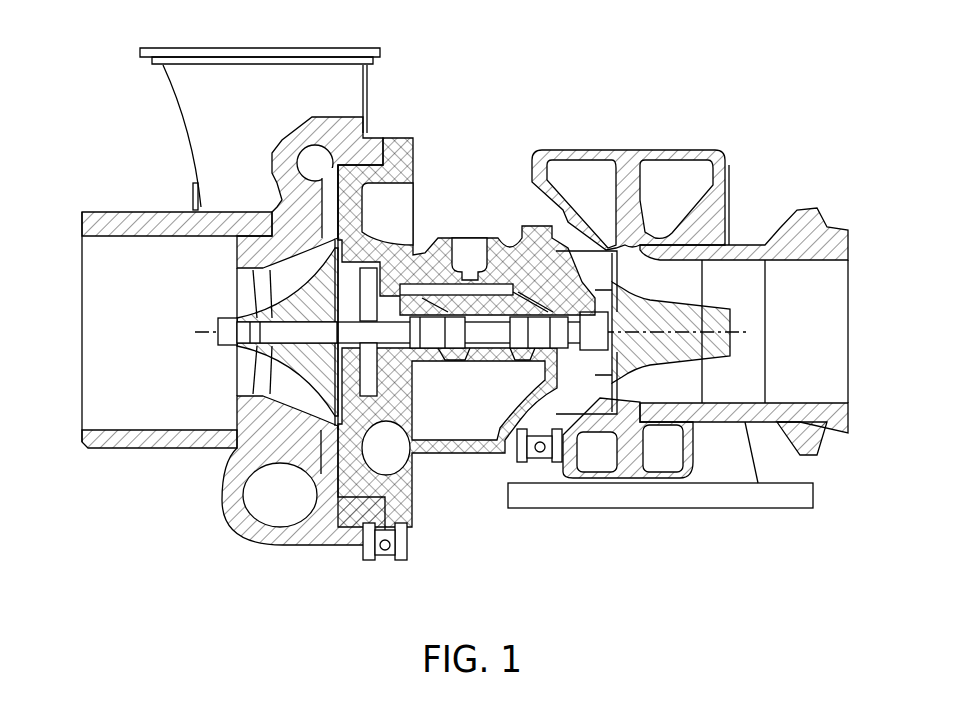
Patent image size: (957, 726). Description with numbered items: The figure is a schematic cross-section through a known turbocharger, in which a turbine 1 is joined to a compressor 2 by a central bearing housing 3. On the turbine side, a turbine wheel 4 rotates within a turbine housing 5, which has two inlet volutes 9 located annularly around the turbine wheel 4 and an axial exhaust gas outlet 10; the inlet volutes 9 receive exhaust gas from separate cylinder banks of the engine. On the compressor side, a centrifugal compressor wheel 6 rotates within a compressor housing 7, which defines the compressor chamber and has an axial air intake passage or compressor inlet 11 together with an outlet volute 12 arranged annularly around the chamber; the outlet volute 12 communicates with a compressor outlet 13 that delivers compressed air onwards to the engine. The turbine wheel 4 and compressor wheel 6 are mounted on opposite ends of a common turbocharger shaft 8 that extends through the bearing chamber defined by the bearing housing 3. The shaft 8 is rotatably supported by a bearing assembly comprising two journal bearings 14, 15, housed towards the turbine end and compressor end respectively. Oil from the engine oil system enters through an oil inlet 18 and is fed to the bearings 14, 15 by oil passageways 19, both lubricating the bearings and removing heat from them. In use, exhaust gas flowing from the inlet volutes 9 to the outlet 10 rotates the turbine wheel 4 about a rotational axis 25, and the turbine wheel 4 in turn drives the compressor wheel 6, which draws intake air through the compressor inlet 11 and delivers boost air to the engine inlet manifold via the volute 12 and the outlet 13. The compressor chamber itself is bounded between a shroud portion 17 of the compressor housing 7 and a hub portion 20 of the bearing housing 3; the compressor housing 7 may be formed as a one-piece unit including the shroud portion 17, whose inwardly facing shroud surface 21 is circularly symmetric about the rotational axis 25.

The turbine 1 is at (668, 104).
The compressor 2 is at (150, 505).
The central bearing housing 3 is at (466, 345).
The turbine wheel 4 is at (657, 352).
The turbine housing 5 is at (777, 417).
The compressor wheel 6 is at (273, 315).
The compressor housing 7 is at (255, 221).
The turbocharger shaft 8 is at (515, 335).
The inlet volutes 9 is at (668, 177).
The axial exhaust gas outlet 10 is at (740, 288).
The axial air intake passage 11 is at (110, 267).
The outlet volute 12 is at (255, 256).
The compressor outlet 13 is at (194, 82).
The journal bearing 14 is at (530, 362).
The journal bearing 15 is at (438, 357).
The shroud portion 17 is at (300, 423).
The oil inlet 18 is at (473, 252).
The oil passageways 19 is at (527, 298).
The hub portion 20 is at (350, 200).
The shroud surface 21 is at (300, 405).
The rotational axis 25 is at (748, 332).